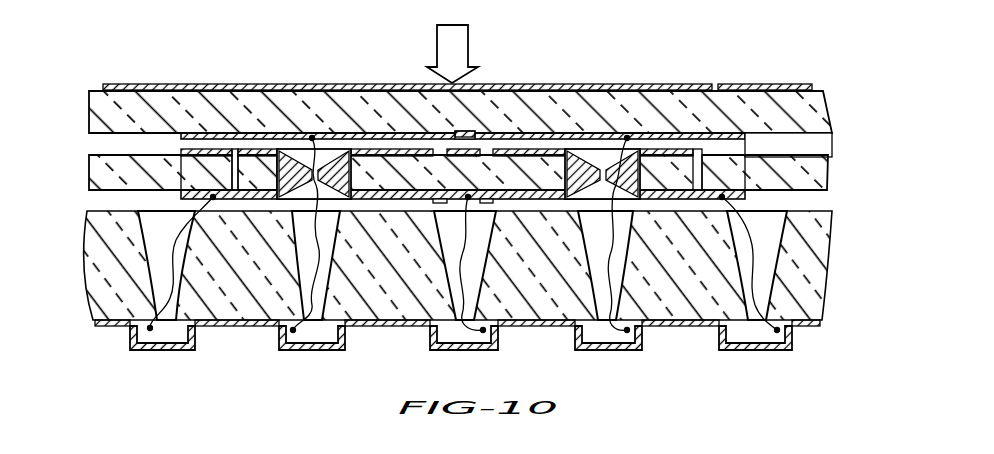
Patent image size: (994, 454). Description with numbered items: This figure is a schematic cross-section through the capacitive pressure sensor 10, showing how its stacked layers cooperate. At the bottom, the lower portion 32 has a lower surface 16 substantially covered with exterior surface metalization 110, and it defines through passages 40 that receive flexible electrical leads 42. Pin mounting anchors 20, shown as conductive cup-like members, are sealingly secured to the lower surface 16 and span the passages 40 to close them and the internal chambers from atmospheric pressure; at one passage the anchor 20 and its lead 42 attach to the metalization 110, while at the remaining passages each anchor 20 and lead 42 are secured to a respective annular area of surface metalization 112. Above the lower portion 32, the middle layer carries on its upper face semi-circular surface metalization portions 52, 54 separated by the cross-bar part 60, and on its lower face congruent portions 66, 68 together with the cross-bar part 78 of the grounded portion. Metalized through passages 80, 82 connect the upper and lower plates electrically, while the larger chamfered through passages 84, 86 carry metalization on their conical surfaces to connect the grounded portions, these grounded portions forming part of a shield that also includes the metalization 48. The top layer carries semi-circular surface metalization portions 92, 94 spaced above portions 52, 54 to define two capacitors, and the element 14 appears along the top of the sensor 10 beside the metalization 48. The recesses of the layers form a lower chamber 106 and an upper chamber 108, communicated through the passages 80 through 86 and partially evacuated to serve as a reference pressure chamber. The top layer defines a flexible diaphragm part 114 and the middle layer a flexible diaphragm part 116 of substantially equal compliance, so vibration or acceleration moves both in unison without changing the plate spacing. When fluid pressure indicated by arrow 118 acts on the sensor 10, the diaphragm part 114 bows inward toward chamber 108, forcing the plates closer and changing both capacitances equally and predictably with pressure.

The sensor 10 is at (228, 68).
The first circuit member 14 is at (808, 69).
The lower surface 16 is at (820, 327).
The pin mounting anchors 20 is at (178, 350).
The lower portion 32 is at (822, 263).
The through passages 40 is at (160, 293).
The flexible electrical leads 42 is at (180, 259).
The surface metalization portion 48 is at (748, 69).
The surface metalization portion 52 is at (535, 149).
The surface metalization portion 54 is at (430, 149).
The cross-bar part 60 is at (470, 149).
The surface metalization portion 66 is at (705, 206).
The surface metalization portion 68 is at (410, 216).
The cross-bar part 78 is at (470, 225).
The through passage 80 is at (705, 183).
The through passage 82 is at (235, 173).
The through passage 84 is at (628, 136).
The through passage 86 is at (340, 150).
The surface metalization portion 92 is at (598, 150).
The surface metalization portion 94 is at (310, 136).
The chamber 106 is at (826, 204).
The chamber 108 is at (826, 143).
The exterior surface metalization 110 is at (245, 326).
The annular area of surface metalization 112 is at (202, 326).
The flexible diaphragm part 114 is at (832, 106).
The flexible diaphragm part 116 is at (815, 179).
The arrow 118 is at (470, 46).